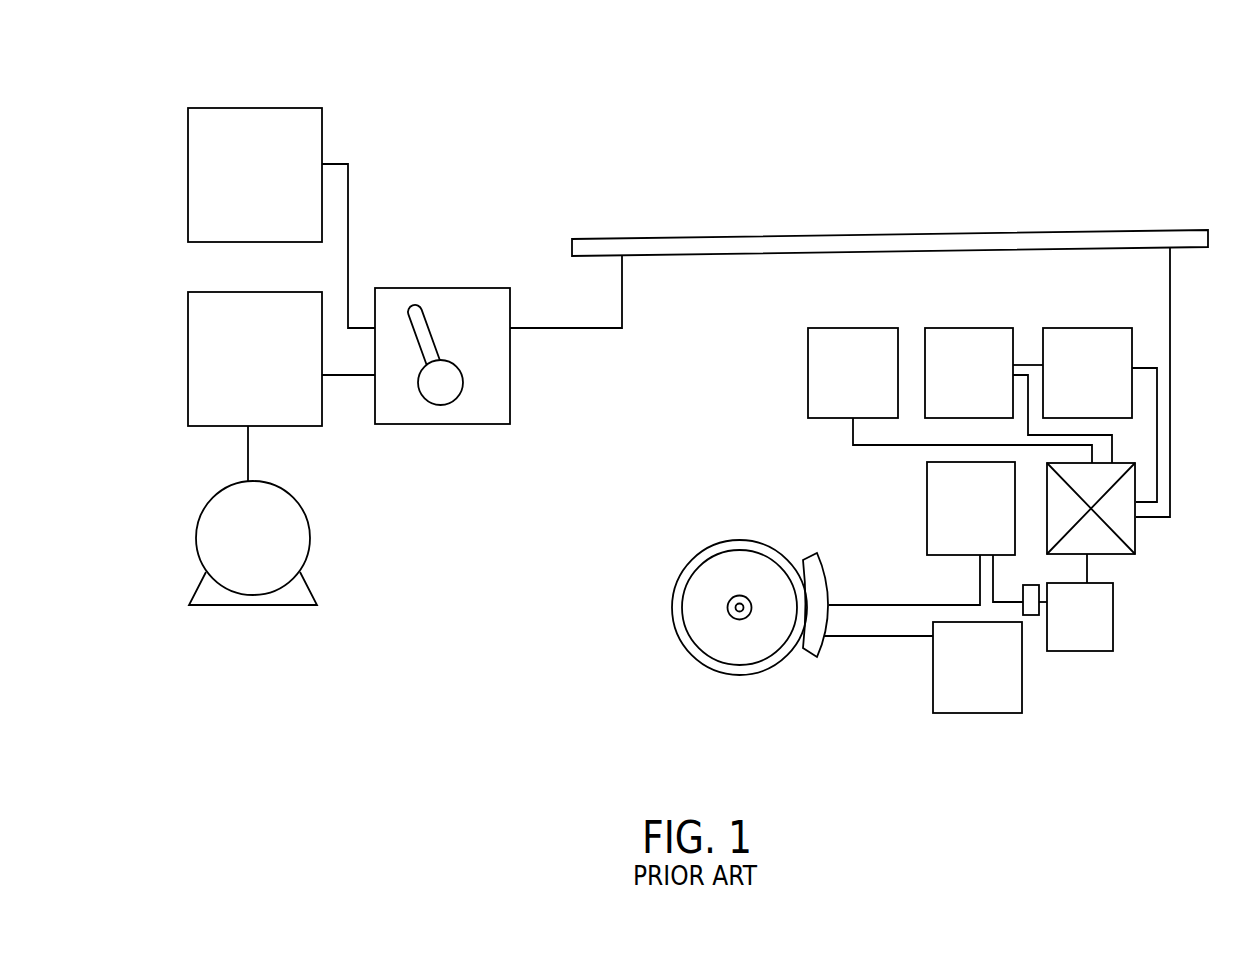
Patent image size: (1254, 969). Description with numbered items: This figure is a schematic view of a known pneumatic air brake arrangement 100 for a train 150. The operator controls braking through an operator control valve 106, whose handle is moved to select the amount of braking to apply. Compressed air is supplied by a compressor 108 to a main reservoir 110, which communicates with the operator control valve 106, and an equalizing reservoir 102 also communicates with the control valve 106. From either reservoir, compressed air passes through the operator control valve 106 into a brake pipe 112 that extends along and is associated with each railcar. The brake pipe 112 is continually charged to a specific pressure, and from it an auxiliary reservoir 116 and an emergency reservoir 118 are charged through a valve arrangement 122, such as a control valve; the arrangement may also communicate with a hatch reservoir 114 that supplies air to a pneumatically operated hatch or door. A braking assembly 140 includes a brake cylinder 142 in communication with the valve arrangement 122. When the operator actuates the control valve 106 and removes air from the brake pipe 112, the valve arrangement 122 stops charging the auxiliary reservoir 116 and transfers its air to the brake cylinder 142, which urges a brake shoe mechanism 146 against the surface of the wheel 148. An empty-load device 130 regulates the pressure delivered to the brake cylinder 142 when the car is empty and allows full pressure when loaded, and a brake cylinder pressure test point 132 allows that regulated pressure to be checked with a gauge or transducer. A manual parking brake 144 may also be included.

The air brake arrangement 100 is at (733, 120).
The equalizing reservoir 102 is at (278, 118).
The operator control valve 106 is at (442, 427).
The compressor 108 is at (210, 523).
The main reservoir 110 is at (198, 337).
The brake pipe 112 is at (970, 233).
The hatch reservoir 114 is at (838, 327).
The auxiliary reservoir 116 is at (970, 327).
The emergency reservoir 118 is at (1097, 327).
The valve arrangement 122 is at (1138, 549).
The empty-load device 130 is at (1098, 653).
The brake cylinder pressure test point 132 is at (1024, 618).
The braking assembly 140 is at (788, 492).
The brake cylinder 142 is at (935, 513).
The manual parking brake 144 is at (982, 715).
The brake shoe mechanism 146 is at (818, 653).
The wheel 148 is at (687, 565).
The train 150 is at (1045, 78).